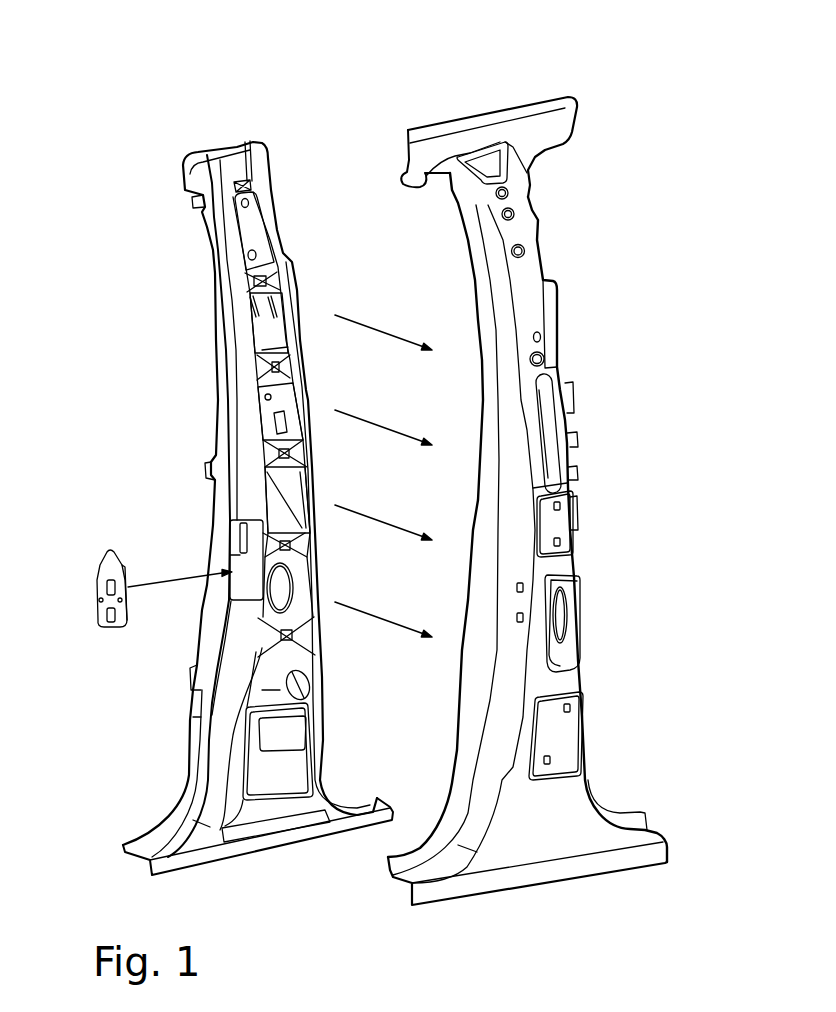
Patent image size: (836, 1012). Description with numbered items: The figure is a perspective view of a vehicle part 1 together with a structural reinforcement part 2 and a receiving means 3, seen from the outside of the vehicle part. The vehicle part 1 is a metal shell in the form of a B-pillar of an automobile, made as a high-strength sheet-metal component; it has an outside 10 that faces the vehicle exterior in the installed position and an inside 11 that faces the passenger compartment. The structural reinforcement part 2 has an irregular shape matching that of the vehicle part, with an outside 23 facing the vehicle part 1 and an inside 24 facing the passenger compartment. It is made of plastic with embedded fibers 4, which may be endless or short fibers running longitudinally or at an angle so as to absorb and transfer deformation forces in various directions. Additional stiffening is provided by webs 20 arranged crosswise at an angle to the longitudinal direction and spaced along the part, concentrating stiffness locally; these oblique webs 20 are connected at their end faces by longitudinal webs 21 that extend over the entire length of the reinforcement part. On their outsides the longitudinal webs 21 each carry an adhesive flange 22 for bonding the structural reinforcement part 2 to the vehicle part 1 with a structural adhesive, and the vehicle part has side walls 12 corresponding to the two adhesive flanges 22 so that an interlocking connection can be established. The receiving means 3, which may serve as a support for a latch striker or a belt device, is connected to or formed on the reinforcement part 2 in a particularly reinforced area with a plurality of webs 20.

The vehicle part 1 is at (597, 237).
The structural reinforcement part 2 is at (153, 136).
The receiving means 3 is at (100, 590).
The fibers 4 is at (245, 363).
The outside 10 is at (556, 338).
The inside 11 is at (430, 207).
The side walls 12 is at (517, 637).
The webs 20 is at (262, 646).
The longitudinal webs 21 is at (233, 767).
The adhesive flange 22 is at (250, 437).
The outside 23 is at (262, 178).
The inside 24 is at (200, 253).